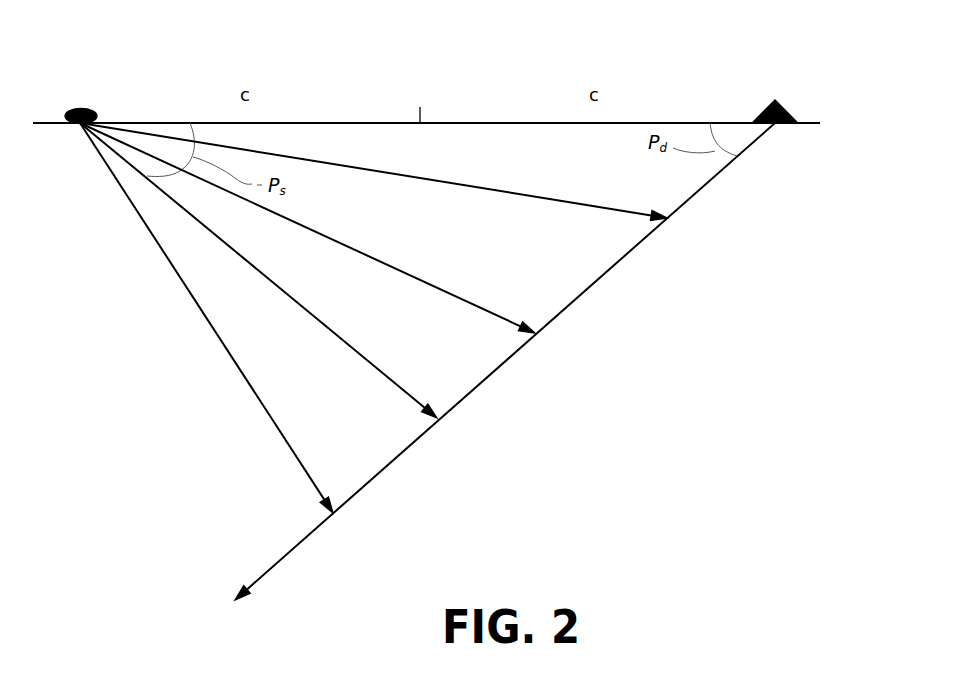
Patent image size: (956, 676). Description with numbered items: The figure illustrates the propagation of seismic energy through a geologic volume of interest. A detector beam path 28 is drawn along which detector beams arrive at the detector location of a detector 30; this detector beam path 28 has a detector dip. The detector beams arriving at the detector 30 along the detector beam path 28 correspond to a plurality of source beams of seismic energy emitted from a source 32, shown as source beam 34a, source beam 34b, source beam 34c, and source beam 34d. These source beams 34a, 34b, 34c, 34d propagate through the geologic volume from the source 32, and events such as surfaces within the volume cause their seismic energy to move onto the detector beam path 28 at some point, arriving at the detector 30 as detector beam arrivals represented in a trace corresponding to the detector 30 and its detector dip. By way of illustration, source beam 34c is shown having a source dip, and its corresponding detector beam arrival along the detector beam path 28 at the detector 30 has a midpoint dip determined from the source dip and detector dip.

The detector beam path 28 is at (619, 263).
The detector 30 is at (760, 110).
The source 32 is at (78, 105).
The source beam 34a is at (523, 195).
The source beam 34b is at (392, 267).
The source beam 34c is at (350, 346).
The source beam 34d is at (255, 393).